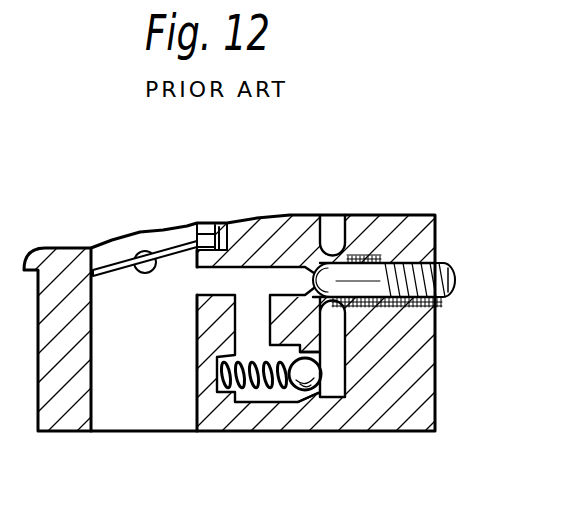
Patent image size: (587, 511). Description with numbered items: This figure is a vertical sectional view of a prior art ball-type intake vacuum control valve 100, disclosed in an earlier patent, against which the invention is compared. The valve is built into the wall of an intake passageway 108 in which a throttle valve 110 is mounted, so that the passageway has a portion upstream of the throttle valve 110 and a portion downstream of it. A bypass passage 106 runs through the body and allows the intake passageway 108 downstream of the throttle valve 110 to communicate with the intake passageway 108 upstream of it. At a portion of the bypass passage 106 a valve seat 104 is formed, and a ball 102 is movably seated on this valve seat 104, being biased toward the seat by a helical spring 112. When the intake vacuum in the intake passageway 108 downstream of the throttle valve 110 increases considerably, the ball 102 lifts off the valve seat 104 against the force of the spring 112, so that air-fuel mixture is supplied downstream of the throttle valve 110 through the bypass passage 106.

The prior art intake vacuum control valve 100 is at (336, 371).
The ball 102 is at (290, 392).
The valve seat 104 is at (317, 396).
The bypass passage 106 is at (247, 280).
The intake passageway 108 is at (153, 320).
The throttle valve 110 is at (112, 263).
The helical spring 112 is at (255, 389).